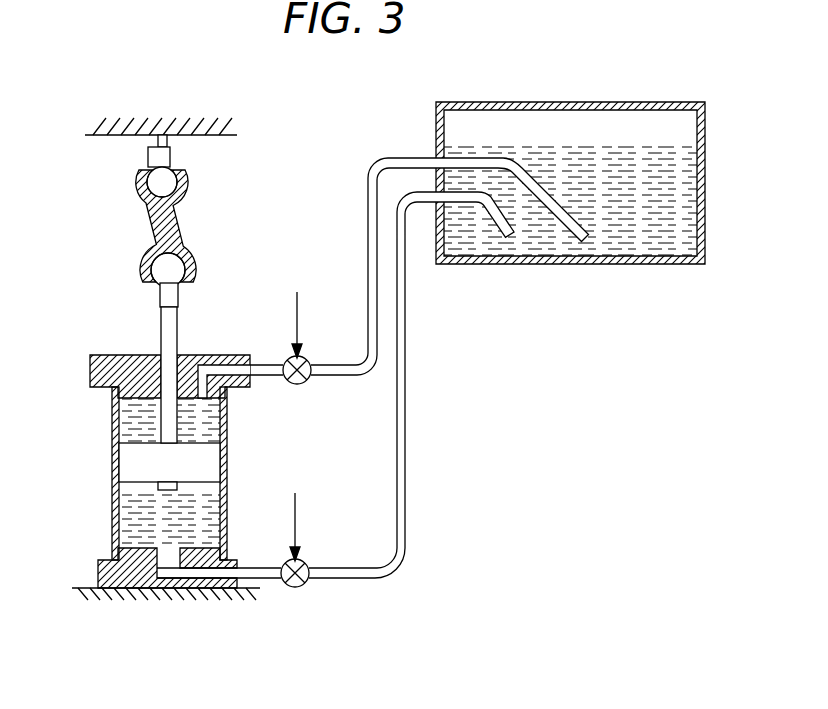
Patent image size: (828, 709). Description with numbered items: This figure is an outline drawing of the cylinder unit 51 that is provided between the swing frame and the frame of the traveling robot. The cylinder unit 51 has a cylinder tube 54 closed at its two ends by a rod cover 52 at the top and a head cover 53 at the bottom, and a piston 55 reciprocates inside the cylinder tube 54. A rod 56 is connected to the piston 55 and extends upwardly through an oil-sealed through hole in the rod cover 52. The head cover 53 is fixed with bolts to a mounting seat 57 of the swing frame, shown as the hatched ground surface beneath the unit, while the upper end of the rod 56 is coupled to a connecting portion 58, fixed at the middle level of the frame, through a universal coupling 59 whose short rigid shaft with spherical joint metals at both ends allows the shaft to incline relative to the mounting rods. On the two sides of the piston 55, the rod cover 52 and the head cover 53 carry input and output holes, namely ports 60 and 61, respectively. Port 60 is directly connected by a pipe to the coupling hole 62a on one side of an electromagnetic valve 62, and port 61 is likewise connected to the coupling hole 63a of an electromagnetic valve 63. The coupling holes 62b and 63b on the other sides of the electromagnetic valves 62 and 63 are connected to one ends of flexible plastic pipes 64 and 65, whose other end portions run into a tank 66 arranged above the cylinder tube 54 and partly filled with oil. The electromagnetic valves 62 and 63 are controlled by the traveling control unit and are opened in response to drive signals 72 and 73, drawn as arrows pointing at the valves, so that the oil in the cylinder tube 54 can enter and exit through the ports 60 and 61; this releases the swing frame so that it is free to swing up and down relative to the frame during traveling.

The cylinder unit 51 is at (98, 473).
The rod cover 52 is at (212, 355).
The head cover 53 is at (122, 590).
The cylinder tube 54 is at (228, 510).
The piston 55 is at (207, 432).
The rod 56 is at (160, 322).
The mounting seat 57 is at (80, 588).
The connecting portion 58 is at (125, 134).
The universal coupling 59 is at (182, 228).
The input and output hole (port) 60 is at (240, 387).
The input and output hole (port) 61 is at (208, 590).
The electromagnetic valve 62 is at (305, 387).
The coupling hole 62a is at (268, 378).
The coupling hole 62b is at (323, 365).
The electromagnetic valve 63 is at (303, 587).
The coupling hole 63a is at (270, 580).
The coupling hole 63b is at (323, 568).
The flexible plastic pipe 64 is at (367, 233).
The flexible plastic pipe 65 is at (406, 410).
The tank 66 is at (585, 264).
The drive signal 72 is at (295, 303).
The drive signal 73 is at (300, 505).